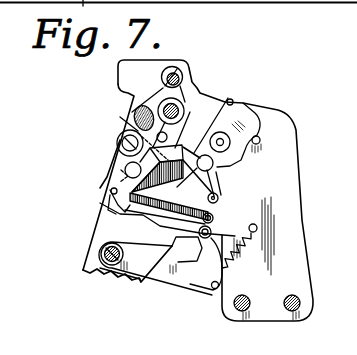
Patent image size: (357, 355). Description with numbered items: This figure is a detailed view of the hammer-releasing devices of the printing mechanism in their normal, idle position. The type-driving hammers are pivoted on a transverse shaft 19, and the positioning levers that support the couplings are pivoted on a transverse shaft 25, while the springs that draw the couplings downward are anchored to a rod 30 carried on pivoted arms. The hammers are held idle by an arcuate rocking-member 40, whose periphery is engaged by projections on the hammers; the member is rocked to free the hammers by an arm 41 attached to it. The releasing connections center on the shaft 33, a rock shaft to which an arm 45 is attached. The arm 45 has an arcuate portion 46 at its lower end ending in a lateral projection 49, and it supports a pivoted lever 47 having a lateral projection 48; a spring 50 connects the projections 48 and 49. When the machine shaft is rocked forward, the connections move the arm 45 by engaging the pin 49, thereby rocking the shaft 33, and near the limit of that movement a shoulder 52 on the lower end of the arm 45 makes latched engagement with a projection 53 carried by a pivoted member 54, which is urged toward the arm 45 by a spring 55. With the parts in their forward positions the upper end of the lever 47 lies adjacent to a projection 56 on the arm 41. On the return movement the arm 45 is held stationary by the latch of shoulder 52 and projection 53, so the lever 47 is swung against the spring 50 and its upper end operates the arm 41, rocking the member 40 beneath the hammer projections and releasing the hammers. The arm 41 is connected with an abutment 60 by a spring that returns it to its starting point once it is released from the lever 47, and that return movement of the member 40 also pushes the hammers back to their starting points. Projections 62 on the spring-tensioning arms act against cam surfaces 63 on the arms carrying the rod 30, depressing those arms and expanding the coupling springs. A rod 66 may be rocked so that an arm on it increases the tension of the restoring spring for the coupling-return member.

The shaft 19 is at (175, 70).
The transverse shaft 25 is at (117, 142).
The rod 30 is at (219, 198).
The shaft 33 is at (184, 109).
The rocking-member 40 is at (221, 134).
The arm 41 is at (236, 161).
The arm 45 is at (167, 85).
The arcuate portion 46 is at (187, 249).
The pivoted lever 47 is at (126, 168).
The lateral projection 48 is at (110, 194).
The lateral projection 49 is at (214, 218).
The spring 50 is at (167, 214).
The shoulder 52 is at (158, 220).
The projection 53 is at (212, 232).
The pivoted member 54 is at (169, 266).
The spring 55 is at (248, 236).
The projection 56 is at (212, 170).
The abutment 60 is at (260, 142).
The projection 62 is at (130, 140).
The cam surface 63 is at (181, 130).
The rod 66 is at (247, 298).